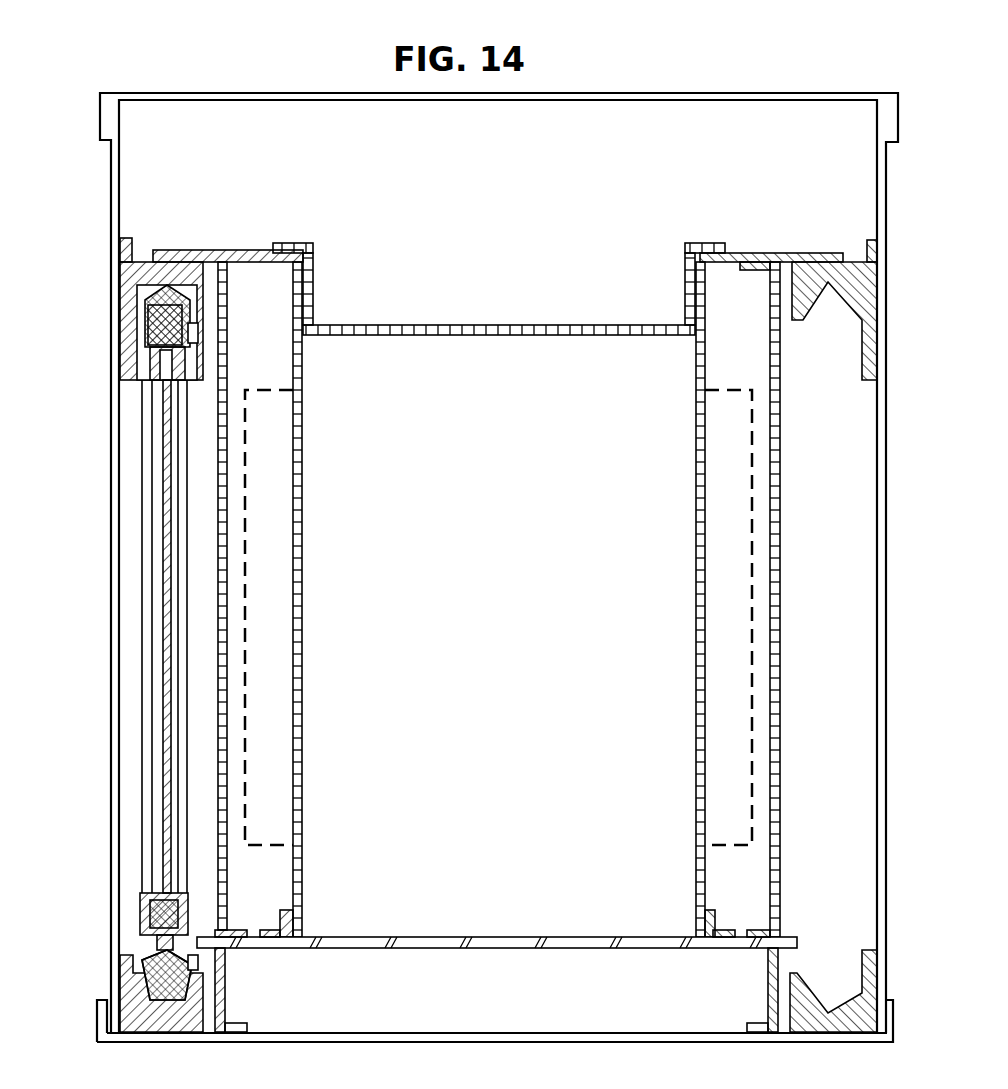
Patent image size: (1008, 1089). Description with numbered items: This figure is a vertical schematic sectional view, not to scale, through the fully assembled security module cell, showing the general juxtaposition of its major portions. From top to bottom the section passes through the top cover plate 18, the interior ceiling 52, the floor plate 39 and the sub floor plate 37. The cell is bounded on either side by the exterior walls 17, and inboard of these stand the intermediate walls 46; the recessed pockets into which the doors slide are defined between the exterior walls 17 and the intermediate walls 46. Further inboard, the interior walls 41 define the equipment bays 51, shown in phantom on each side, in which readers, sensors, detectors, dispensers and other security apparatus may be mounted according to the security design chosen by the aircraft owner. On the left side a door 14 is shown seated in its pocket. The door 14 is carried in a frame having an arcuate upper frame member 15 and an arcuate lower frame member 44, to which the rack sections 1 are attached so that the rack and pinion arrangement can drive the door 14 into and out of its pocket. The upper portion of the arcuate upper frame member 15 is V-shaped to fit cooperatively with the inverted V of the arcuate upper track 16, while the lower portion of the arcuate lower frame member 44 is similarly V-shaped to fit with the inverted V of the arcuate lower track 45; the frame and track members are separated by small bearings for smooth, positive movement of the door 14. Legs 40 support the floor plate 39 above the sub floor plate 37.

The rack sections 1 is at (200, 333).
The door 14 is at (160, 622).
The arcuate upper frame member 15 is at (140, 390).
The arcuate upper track 16 is at (146, 262).
The exterior walls 17 is at (110, 172).
The top cover plate 18 is at (490, 100).
The sub floor plate 37 is at (470, 1033).
The floor plate 39 is at (433, 937).
The support leg 40 is at (226, 992).
The interior walls 41 is at (222, 265).
The arcuate lower frame member 44 is at (145, 910).
The arcuate lower track 45 is at (135, 1000).
The intermediate walls 46 is at (228, 352).
The equipment bays 51 is at (270, 504).
The interior ceiling 52 is at (533, 325).